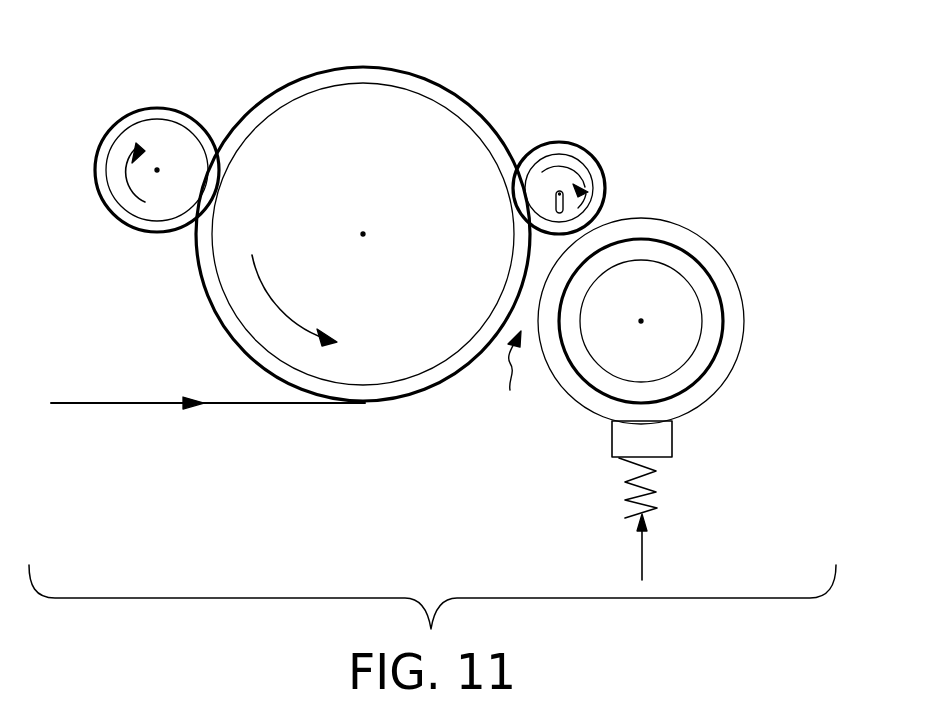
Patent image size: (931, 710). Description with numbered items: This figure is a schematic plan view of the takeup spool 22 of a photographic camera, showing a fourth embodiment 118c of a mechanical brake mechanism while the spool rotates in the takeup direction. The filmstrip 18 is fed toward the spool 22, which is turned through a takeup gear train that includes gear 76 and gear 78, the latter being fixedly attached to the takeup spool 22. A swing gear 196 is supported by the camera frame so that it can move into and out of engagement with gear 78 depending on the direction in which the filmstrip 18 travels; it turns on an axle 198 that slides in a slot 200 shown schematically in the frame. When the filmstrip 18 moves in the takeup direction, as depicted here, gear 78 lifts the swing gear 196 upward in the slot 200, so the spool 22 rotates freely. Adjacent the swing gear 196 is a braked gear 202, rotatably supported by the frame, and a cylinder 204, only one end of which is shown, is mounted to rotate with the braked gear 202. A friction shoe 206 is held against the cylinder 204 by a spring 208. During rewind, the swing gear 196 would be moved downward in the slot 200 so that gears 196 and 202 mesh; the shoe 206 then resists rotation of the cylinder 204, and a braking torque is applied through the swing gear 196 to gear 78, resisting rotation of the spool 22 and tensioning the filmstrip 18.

The filmstrip 18 is at (250, 404).
The takeup spool 22 is at (288, 119).
The gear 76 is at (158, 107).
The gear 78 is at (363, 67).
The fourth embodiment of mechanical brake mechanism 118c is at (487, 374).
The swing gear 196 is at (580, 146).
The axle 198 is at (557, 189).
The slot 200 is at (597, 176).
The braked gear 202 is at (687, 246).
The cylinder 204 is at (720, 367).
The friction shoe 206 is at (665, 440).
The spring 208 is at (657, 500).